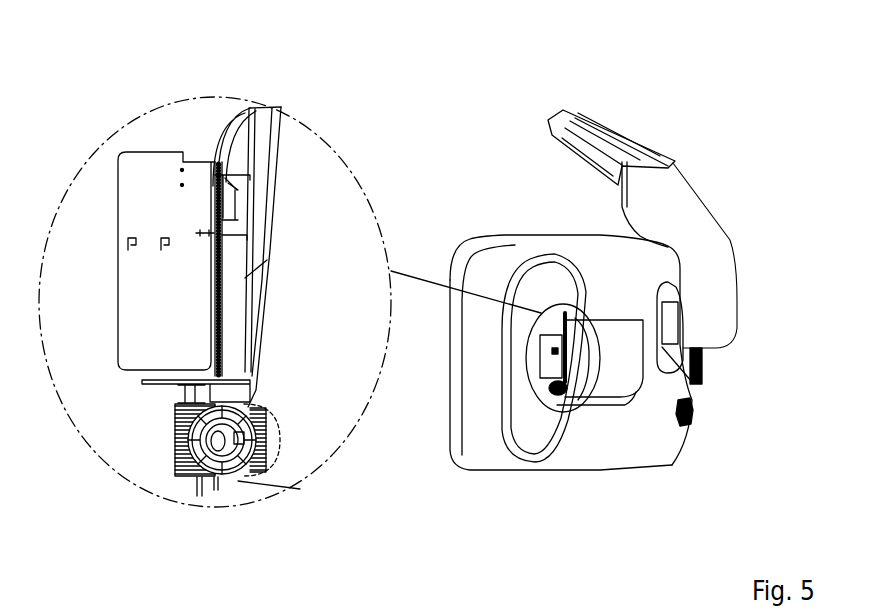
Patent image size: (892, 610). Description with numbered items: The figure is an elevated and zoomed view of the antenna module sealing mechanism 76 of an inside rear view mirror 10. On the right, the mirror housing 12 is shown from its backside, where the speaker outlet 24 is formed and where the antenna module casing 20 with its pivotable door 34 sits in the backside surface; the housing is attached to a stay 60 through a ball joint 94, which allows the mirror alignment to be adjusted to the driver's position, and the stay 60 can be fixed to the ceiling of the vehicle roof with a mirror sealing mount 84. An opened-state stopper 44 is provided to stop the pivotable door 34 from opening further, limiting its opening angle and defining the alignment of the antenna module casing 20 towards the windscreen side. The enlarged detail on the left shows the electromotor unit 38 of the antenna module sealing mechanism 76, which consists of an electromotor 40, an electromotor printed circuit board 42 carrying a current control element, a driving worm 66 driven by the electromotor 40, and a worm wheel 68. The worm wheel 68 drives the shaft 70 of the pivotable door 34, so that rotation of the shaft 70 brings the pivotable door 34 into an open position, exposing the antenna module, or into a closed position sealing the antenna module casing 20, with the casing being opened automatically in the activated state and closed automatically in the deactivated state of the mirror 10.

The inside rear view mirror 10 is at (708, 130).
The mirror housing 12 is at (583, 462).
The antenna module casing 20 is at (632, 368).
The pivotable door 34 is at (632, 368).
The speaker outlet 24 is at (703, 360).
The electromotor unit 38 is at (313, 130).
The electromotor 40 is at (233, 293).
The electromotor printed circuit board 42 is at (118, 192).
The opened-state stopper 44 is at (618, 410).
The stay 60 is at (712, 210).
The driving worm 66 is at (175, 439).
The worm wheel 68 is at (252, 408).
The shaft 70 is at (198, 466).
The antenna module sealing mechanism 76 is at (352, 143).
The mirror sealing mount 84 is at (624, 116).
The ball joint 94 is at (693, 385).